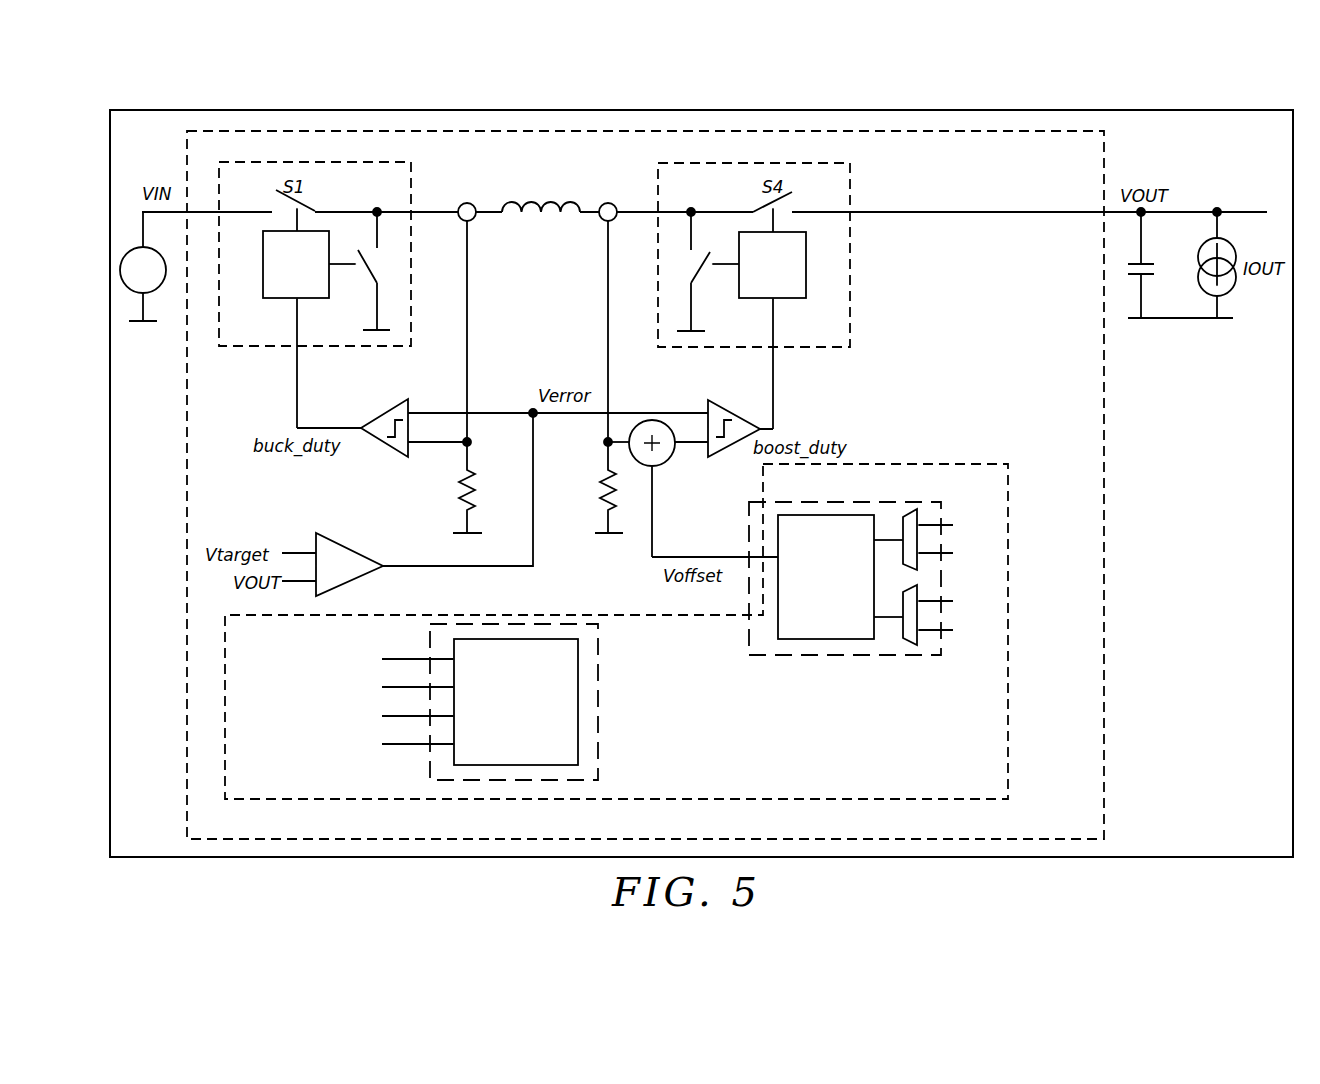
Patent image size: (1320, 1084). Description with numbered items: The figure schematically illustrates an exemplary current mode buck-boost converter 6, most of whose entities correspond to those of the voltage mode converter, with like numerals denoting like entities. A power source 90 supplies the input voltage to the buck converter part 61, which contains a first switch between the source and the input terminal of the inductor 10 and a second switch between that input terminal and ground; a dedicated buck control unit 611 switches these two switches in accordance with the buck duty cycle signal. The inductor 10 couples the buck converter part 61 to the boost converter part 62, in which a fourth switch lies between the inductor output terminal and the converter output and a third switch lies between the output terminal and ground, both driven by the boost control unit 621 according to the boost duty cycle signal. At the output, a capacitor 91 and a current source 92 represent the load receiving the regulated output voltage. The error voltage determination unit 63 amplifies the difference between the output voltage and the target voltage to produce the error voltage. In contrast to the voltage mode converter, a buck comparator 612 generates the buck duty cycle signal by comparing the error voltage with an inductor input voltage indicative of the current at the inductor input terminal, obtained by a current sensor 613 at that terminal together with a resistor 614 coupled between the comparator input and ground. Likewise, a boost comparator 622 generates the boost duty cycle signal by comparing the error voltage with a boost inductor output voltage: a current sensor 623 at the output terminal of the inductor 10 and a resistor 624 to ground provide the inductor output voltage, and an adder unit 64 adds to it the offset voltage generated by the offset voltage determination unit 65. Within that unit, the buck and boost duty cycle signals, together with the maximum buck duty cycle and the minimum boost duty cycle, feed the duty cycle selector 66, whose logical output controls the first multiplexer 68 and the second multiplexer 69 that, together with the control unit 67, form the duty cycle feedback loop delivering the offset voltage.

The current mode buck-boost converter 6 is at (1104, 401).
The inductor 10 is at (542, 217).
The buck converter part 61 is at (338, 295).
The buck control unit 611 is at (309, 318).
The buck comparator 612 is at (382, 413).
The current sensor 613 is at (467, 203).
The resistor 614 is at (483, 483).
The boost converter part 62 is at (778, 296).
The boost control unit 621 is at (759, 319).
The boost comparator 622 is at (735, 413).
The current sensor 623 is at (608, 203).
The resistor 624 is at (595, 483).
The error voltage determination unit 63 is at (357, 552).
The adder unit 64 is at (655, 466).
The offset voltage determination unit 65 is at (655, 631).
The duty cycle selector 66 is at (480, 702).
The control unit 67 is at (826, 577).
The first multiplexer 68 is at (902, 525).
The second multiplexer 69 is at (902, 633).
The power source 90 is at (143, 266).
The capacitor 91 is at (1158, 271).
The current source 92 is at (1236, 276).